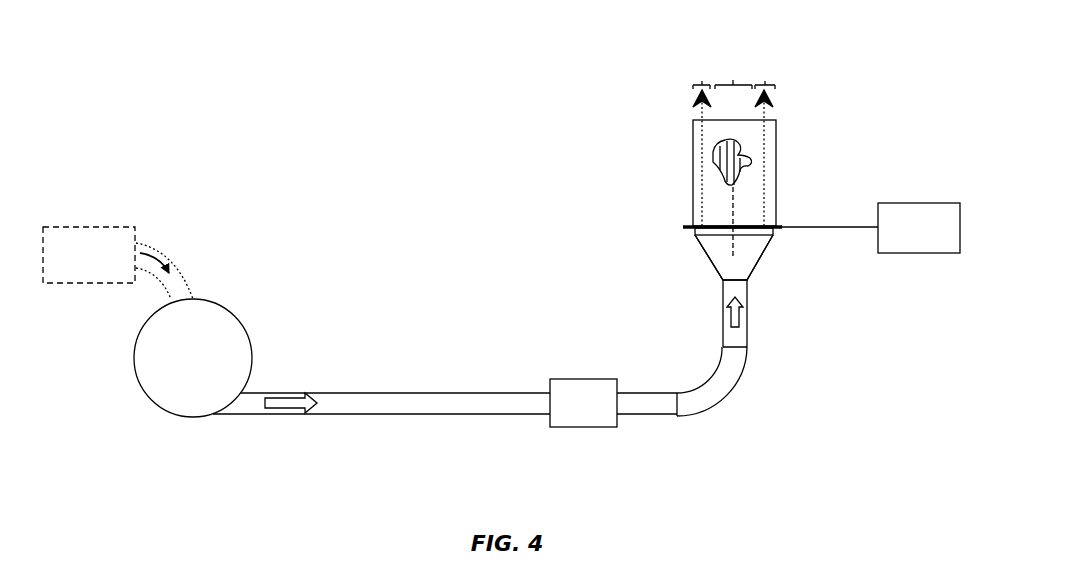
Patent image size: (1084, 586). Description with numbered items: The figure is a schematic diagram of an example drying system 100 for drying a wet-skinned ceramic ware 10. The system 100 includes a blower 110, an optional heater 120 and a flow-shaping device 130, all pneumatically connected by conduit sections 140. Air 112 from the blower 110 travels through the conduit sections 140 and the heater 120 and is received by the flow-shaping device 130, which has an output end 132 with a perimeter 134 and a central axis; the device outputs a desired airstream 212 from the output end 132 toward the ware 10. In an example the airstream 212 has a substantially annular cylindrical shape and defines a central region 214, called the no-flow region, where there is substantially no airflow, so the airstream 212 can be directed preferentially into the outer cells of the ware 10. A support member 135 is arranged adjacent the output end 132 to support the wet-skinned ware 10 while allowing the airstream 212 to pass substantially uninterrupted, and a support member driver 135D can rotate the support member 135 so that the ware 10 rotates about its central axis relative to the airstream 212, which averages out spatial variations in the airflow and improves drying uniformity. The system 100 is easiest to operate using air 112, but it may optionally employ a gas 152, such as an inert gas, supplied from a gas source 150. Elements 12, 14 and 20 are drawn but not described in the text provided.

The drying system 100 is at (199, 134).
The wet-skinned ware 10 is at (806, 123).
The inlet 12 is at (701, 246).
The outlet region 14 is at (710, 119).
The particle 20 is at (753, 160).
The blower 110 is at (193, 358).
The air 112 is at (283, 393).
The heater 120 is at (583, 403).
The flow-shaping device 130 is at (767, 251).
The output end 132 is at (750, 226).
The perimeter 134 is at (777, 232).
The support member 135 is at (688, 226).
The support member driver 135D is at (871, 228).
The conduit sections 140 is at (396, 415).
The gas source 150 is at (89, 255).
The gas 152 is at (157, 250).
The airstream 212 is at (702, 81).
The central region 214 is at (730, 69).